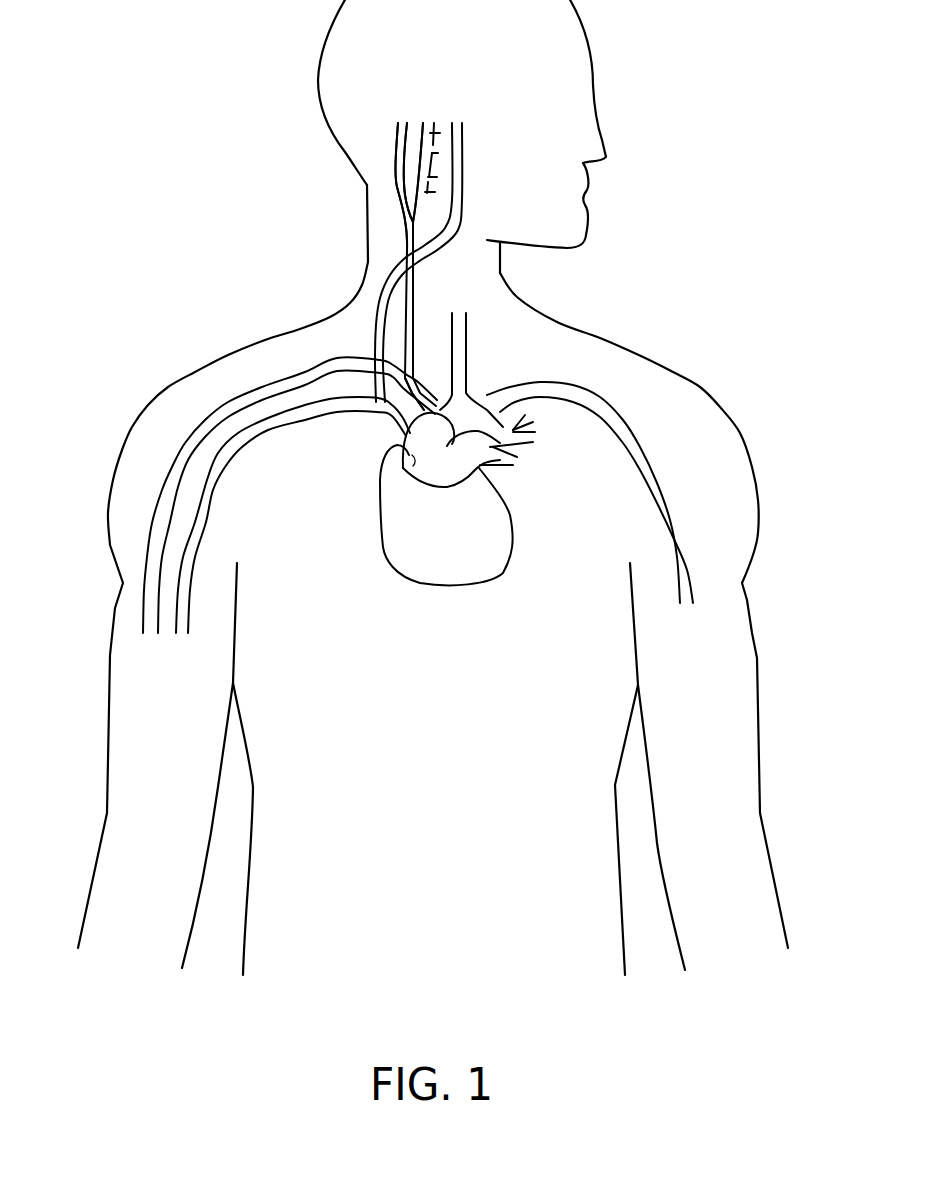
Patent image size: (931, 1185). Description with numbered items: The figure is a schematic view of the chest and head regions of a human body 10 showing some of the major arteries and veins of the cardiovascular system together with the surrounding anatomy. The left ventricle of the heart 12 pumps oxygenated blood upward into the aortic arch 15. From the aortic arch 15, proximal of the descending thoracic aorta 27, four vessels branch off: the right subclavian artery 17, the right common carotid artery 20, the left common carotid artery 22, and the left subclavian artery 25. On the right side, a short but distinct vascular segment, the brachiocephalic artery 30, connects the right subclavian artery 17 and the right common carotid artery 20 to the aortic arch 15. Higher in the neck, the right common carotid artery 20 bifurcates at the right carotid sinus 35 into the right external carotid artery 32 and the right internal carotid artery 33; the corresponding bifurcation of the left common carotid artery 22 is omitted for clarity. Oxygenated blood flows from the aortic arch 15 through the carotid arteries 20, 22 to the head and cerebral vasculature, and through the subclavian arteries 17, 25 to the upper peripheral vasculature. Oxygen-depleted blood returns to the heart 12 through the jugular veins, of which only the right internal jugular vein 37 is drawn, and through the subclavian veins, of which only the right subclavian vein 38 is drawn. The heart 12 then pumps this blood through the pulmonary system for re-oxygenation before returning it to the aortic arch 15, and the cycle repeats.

The human body 10 is at (246, 228).
The heart 12 is at (497, 563).
The aortic arch 15 is at (413, 458).
The right subclavian artery 17 is at (310, 369).
The right common carotid artery 20 is at (407, 274).
The left common carotid artery 22 is at (464, 355).
The left subclavian artery 25 is at (573, 383).
The descending thoracic aorta 27 is at (497, 408).
The brachiocephalic artery 30 is at (417, 390).
The right external carotid artery 32 is at (397, 146).
The right internal carotid artery 33 is at (434, 133).
The right carotid sinus 35 is at (387, 206).
The right internal jugular vein 37 is at (460, 174).
The right subclavian vein 38 is at (229, 466).